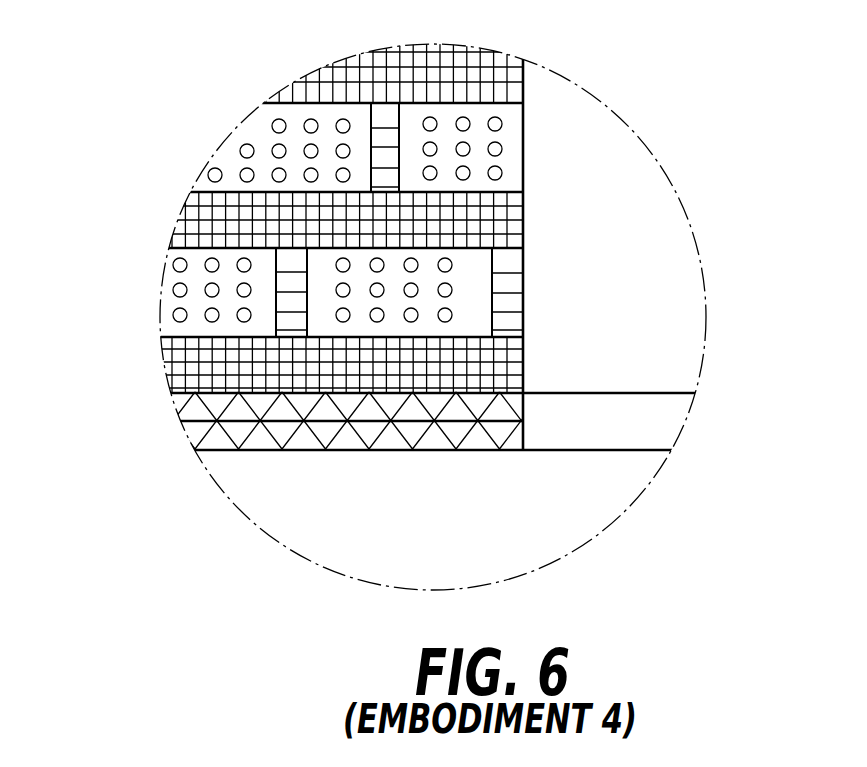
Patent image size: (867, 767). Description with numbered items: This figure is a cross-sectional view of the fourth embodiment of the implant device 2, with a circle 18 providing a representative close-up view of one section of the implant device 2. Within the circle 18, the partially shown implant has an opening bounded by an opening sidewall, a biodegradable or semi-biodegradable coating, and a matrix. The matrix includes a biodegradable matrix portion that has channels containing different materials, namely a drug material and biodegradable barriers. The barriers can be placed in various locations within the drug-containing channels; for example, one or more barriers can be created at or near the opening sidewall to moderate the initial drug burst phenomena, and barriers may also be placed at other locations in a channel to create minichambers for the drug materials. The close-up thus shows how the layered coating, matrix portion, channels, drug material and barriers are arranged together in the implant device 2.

The implant device 2 is at (432, 452).
The circle 18 is at (628, 100).